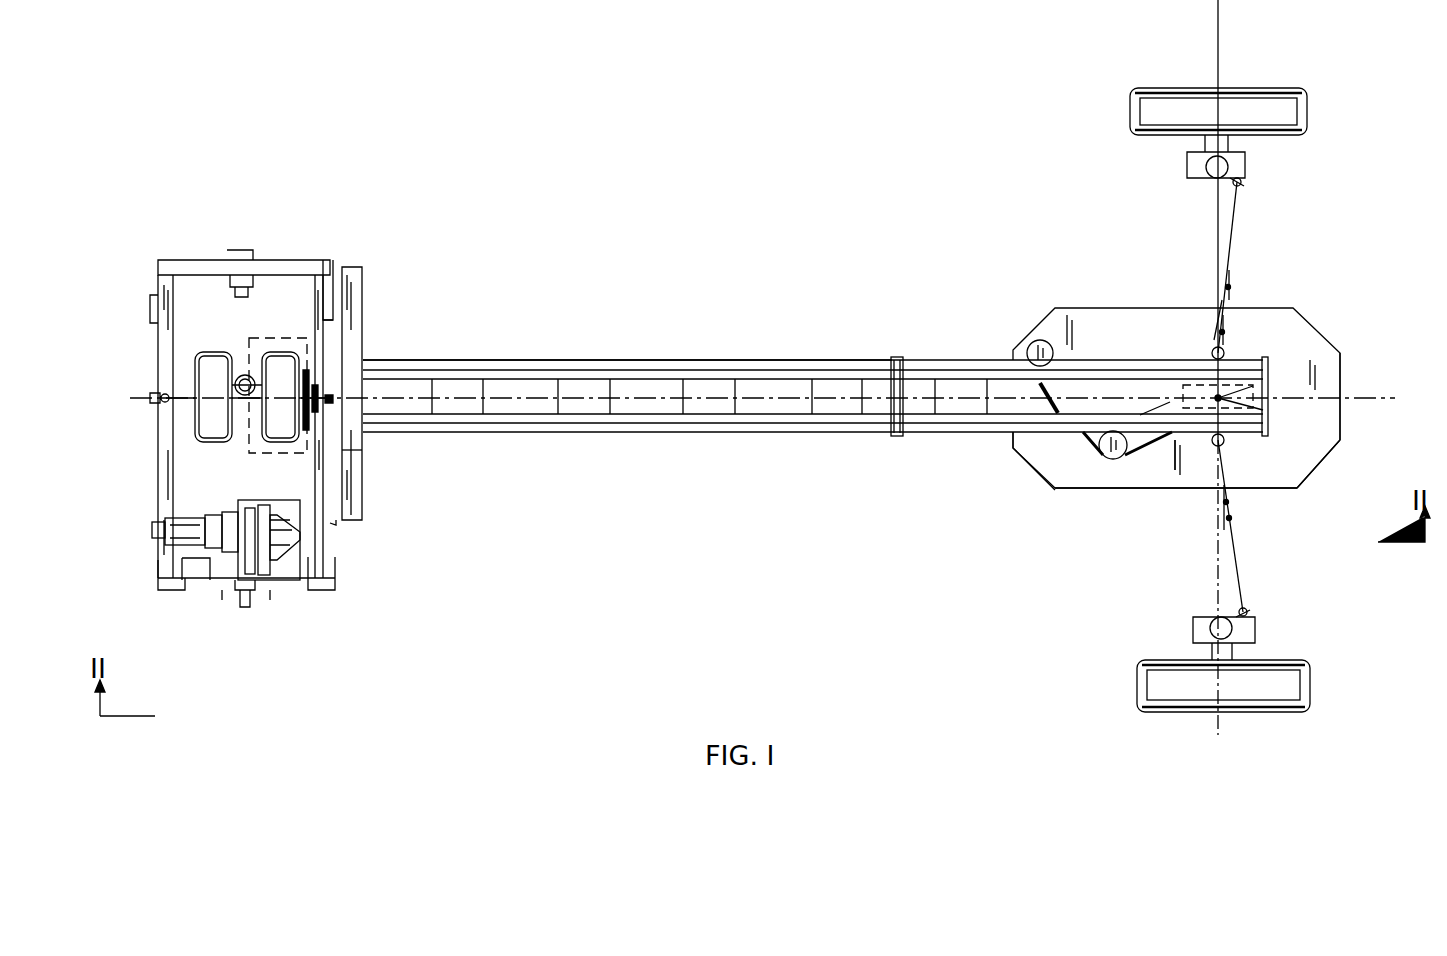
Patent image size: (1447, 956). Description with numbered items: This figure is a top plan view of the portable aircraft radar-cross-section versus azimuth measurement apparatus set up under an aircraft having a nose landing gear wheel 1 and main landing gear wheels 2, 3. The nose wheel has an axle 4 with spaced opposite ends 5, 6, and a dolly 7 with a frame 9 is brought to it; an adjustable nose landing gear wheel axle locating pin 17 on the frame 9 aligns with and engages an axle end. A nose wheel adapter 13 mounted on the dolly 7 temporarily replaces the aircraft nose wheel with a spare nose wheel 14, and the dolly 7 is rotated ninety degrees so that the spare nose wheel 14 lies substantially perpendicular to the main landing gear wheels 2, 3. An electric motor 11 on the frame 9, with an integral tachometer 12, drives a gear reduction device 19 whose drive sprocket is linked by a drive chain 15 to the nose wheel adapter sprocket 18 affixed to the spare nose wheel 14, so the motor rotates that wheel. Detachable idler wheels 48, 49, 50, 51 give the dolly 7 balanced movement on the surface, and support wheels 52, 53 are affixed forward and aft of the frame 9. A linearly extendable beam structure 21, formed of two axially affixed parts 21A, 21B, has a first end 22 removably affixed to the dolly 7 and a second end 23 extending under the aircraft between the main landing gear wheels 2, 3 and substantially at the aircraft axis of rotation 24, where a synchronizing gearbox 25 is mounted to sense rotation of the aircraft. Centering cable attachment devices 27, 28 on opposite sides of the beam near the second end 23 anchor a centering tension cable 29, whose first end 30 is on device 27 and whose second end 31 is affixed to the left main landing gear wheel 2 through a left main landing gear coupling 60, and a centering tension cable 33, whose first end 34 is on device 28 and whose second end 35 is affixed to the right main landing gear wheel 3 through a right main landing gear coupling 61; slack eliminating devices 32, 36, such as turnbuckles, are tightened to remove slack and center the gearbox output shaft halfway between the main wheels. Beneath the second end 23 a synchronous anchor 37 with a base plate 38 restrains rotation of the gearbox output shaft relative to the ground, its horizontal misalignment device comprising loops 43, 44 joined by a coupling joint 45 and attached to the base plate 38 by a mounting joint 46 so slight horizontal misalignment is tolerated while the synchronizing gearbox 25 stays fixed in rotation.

The nose landing gear wheel 1 is at (193, 352).
The main landing gear wheel 2 is at (1300, 705).
The main landing gear wheel 3 is at (1157, 108).
The axle 4 is at (240, 400).
The axle end 5 is at (190, 395).
The axle end 6 is at (303, 398).
The dolly 7 is at (267, 245).
The frame 9 is at (165, 470).
The electric motor 11 is at (170, 525).
The tachometer 12 is at (152, 545).
The nose wheel adapter 13 is at (340, 285).
The spare nose wheel 14 is at (310, 325).
The drive chain 15 is at (345, 484).
The nose landing gear wheel axle locating pin 17 is at (185, 400).
The nose wheel adapter sprocket 18 is at (310, 372).
The gear reduction device 19 is at (282, 565).
The beam structure 21 is at (793, 360).
The beam structure part 21A is at (648, 414).
The beam structure part 21B is at (918, 430).
The first end 22 is at (350, 452).
The second end 23 is at (1222, 437).
The axis of rotation 24 is at (1268, 403).
The synchronizing gearbox 25 is at (1270, 372).
The centering cable attachment device 27 is at (1300, 445).
The centering cable attachment device 28 is at (1222, 352).
The centering tension cable 29 is at (1236, 560).
The first end 30 is at (1218, 448).
The second end 31 is at (1246, 612).
The slack eliminating device 32 is at (1268, 478).
The centering tension cable 33 is at (1228, 233).
The first end 34 is at (1215, 318).
The second end 35 is at (1237, 187).
The slack eliminating device 36 is at (1213, 345).
The synchronous anchor 37 is at (1060, 490).
The base plate 38 is at (1038, 468).
The loop 43 is at (1160, 440).
The loop 44 is at (1088, 438).
The coupling joint 45 is at (1120, 460).
The mounting joint 46 is at (1030, 350).
The detachable idler wheel 48 is at (155, 300).
The detachable idler wheel 49 is at (313, 300).
The detachable idler wheel 50 is at (340, 585).
The detachable idler wheel 51 is at (172, 590).
The support wheel 52 is at (243, 607).
The support wheel 53 is at (233, 290).
The left main landing gear coupling 60 is at (1250, 615).
The right main landing gear coupling 61 is at (1240, 183).